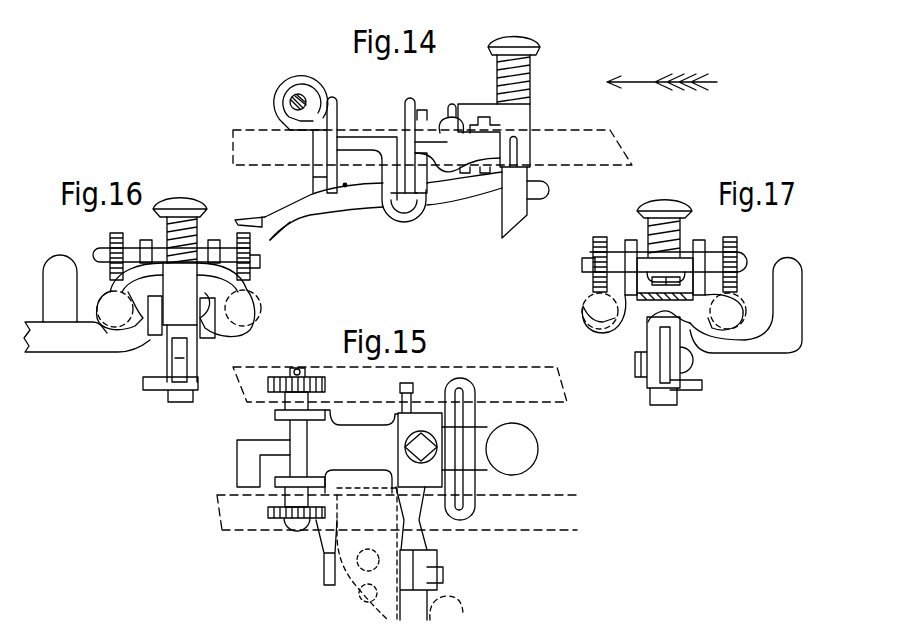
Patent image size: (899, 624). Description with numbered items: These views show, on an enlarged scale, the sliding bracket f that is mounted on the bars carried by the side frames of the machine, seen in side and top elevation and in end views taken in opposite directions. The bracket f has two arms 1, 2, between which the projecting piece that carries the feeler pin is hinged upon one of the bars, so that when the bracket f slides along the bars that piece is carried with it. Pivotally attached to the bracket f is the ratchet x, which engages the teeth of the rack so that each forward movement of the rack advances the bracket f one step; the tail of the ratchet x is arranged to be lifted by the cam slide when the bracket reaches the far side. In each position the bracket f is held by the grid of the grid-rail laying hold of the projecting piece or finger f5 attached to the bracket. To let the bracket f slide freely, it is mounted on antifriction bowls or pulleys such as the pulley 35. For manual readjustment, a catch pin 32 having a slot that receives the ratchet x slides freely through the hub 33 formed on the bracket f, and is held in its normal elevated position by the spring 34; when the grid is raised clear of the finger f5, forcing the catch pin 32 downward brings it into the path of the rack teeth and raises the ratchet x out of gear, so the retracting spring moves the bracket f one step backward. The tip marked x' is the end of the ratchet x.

In FIG. 14, the arm 1 is at (410, 100).
In FIG. 16, the arm 1 is at (60, 288).
In FIG. 15, the arm 1 is at (407, 567).
In FIG. 14, the arm 2 is at (333, 100).
In FIG. 17, the arm 2 is at (746, 306).
In FIG. 15, the arm 2 is at (328, 567).
In FIG. 14, the catch pin 32 is at (540, 45).
In FIG. 16, the catch pin 32 is at (176, 195).
In FIG. 17, the catch pin 32 is at (664, 198).
In FIG. 15, the catch pin 32 is at (468, 449).
In FIG. 14, the hub 33 is at (520, 118).
In FIG. 16, the hub 33 is at (180, 294).
In FIG. 14, the spring 34 is at (528, 82).
In FIG. 16, the spring 34 is at (167, 222).
In FIG. 17, the spring 34 is at (678, 221).
In FIG. 16, the antifriction bowl or pulley 35 is at (250, 247).
In FIG. 17, the antifriction bowl or pulley 35 is at (598, 238).
In FIG. 15, the antifriction bowl or pulley 35 is at (280, 377).
In FIG. 14, the sliding bracket f is at (362, 145).
In FIG. 16, the sliding bracket f is at (158, 332).
In FIG. 17, the sliding bracket f is at (664, 349).
In FIG. 15, the sliding bracket f is at (394, 515).
In FIG. 16, the projecting piece f5 is at (30, 338).
In FIG. 14, the ratchet x is at (407, 206).
In FIG. 17, the ratchet x is at (668, 419).
In FIG. 15, the ratchet x is at (263, 447).
In FIG. 14, the rail tip x' is at (262, 210).
In FIG. 15, the rail tip x' is at (219, 483).